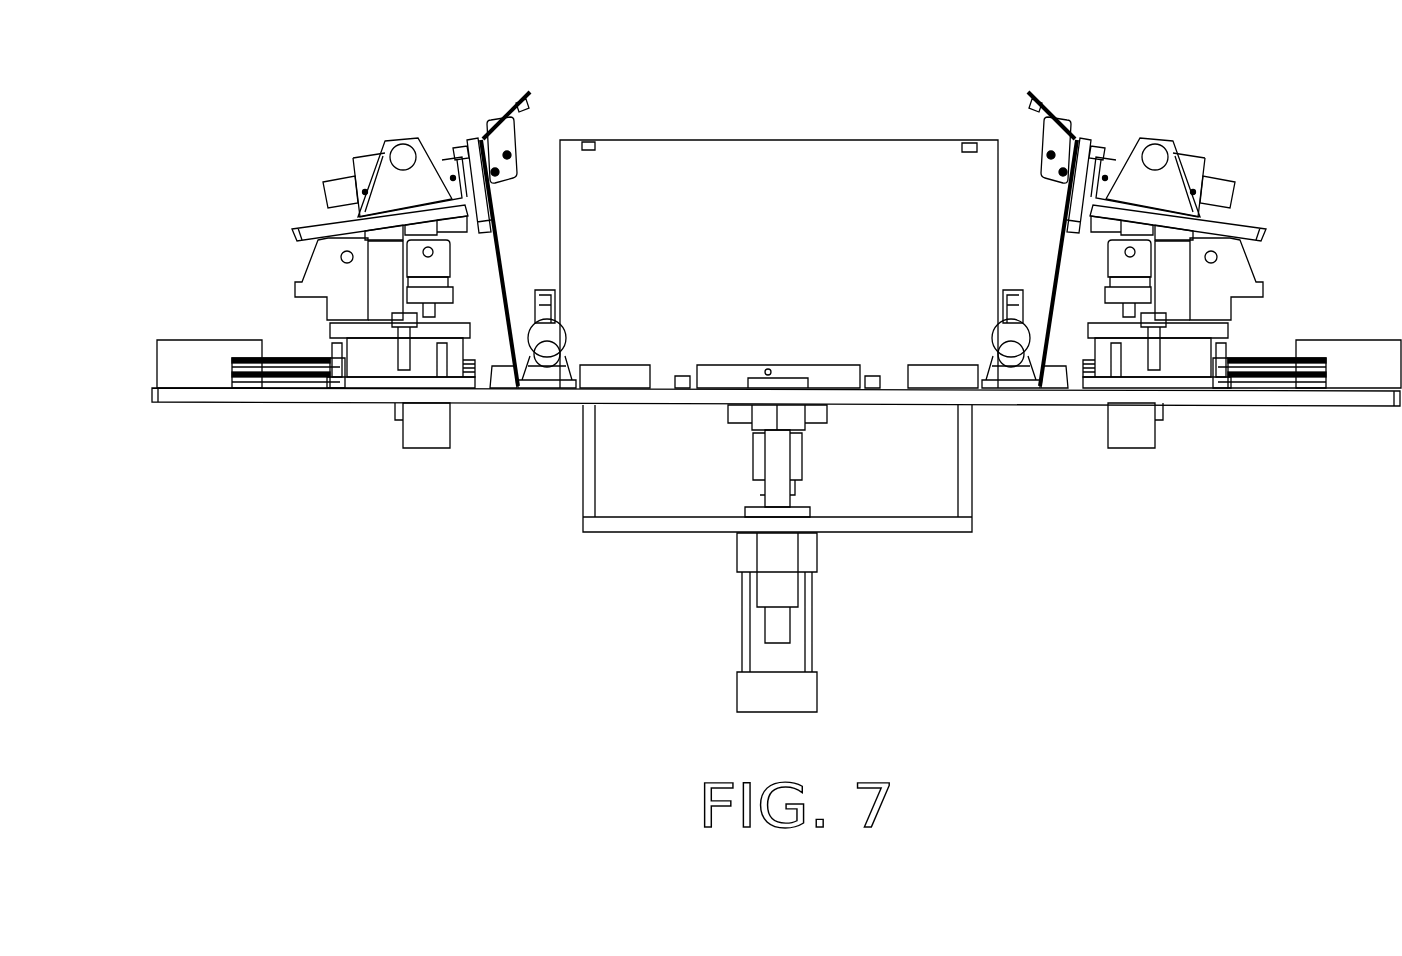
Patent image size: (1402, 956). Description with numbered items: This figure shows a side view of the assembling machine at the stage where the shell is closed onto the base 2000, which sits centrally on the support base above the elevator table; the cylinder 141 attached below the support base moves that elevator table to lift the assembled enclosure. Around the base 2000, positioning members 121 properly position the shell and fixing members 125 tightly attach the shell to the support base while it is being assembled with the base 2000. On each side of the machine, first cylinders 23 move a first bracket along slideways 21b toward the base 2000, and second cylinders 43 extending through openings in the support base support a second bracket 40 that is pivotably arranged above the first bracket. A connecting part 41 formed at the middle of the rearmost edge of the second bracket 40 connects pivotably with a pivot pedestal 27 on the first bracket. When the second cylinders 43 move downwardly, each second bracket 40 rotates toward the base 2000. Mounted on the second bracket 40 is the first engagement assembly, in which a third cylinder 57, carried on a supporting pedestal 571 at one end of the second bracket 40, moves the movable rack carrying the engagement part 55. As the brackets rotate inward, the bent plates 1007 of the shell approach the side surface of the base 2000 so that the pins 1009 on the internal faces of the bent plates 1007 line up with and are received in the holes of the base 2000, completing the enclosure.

The first cylinders 23 is at (188, 360).
The slideways 21b is at (258, 378).
The pivot pedestal 27 is at (318, 278).
The second bracket 40 is at (355, 177).
The connecting part 41 is at (312, 226).
The second cylinders 43 is at (418, 430).
The engagement part 55 is at (498, 140).
The third cylinder 57 is at (403, 157).
The supporting pedestal 571 is at (393, 187).
The bent plates 1007 is at (526, 95).
The pins 1009 is at (530, 107).
The positioning members 121 is at (615, 377).
The fixing members 125 is at (547, 360).
The cylinder 141 is at (782, 653).
The base 2000 is at (787, 172).